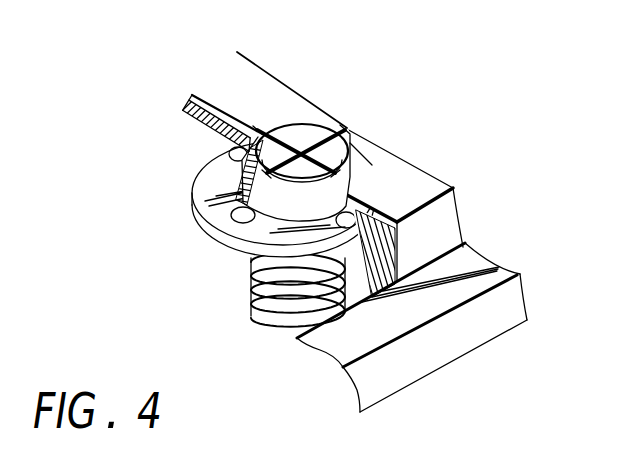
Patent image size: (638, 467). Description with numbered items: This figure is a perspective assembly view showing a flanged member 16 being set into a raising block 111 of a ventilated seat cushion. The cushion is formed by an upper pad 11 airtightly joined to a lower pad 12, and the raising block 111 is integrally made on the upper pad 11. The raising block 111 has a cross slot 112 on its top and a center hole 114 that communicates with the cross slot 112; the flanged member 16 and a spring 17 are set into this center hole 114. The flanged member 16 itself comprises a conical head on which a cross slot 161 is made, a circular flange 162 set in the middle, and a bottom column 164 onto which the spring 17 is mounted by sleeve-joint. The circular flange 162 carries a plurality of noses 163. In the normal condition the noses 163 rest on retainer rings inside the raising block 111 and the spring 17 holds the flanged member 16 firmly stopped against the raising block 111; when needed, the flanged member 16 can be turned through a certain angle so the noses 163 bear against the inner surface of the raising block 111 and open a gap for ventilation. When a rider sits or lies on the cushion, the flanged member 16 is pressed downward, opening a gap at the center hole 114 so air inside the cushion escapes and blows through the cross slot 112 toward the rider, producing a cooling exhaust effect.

The upper pad 11 is at (487, 283).
The lower pad 12 is at (482, 335).
The flanged member 16 is at (210, 153).
The spring 17 is at (257, 312).
The raising block 111 is at (420, 192).
The cross slot 112 is at (235, 118).
The center hole 114 is at (372, 165).
The cross slot 161 is at (318, 130).
The circular flange 162 is at (208, 181).
The nose 163 is at (220, 226).
The bottom column 164 is at (247, 277).